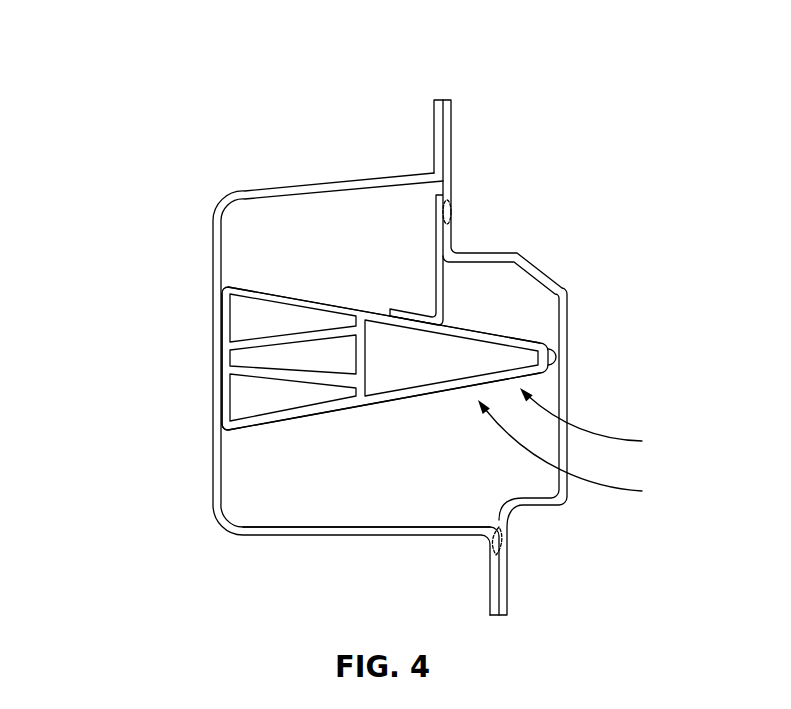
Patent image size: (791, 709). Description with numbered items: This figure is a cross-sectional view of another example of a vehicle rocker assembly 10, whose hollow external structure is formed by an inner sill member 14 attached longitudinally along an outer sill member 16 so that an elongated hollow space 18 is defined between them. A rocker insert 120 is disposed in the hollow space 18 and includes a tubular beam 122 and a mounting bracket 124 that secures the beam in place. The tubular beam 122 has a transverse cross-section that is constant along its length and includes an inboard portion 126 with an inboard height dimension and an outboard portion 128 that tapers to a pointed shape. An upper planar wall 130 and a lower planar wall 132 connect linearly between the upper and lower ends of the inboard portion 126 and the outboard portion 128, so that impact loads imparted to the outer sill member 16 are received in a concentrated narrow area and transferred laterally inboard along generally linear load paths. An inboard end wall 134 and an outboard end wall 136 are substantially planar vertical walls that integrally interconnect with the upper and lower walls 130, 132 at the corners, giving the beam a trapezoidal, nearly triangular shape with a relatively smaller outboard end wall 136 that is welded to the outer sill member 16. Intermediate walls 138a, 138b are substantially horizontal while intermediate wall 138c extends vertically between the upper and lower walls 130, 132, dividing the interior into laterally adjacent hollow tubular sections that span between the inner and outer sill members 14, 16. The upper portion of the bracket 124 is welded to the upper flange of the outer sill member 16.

The vehicle rocker assembly 10 is at (172, 126).
The inner sill member 14 is at (213, 267).
The outer sill member 16 is at (560, 284).
The elongated hollow space 18 is at (387, 479).
The rocker insert 120 is at (579, 454).
The tubular beam 122 is at (312, 282).
The mounting bracket 124 is at (444, 283).
The inboard portion 126 is at (240, 440).
The outboard portion 128 is at (600, 423).
The upper planar wall 130 is at (272, 290).
The lower planar wall 132 is at (420, 397).
The inboard end wall 134 is at (213, 387).
The outboard end wall 136 is at (556, 357).
The intermediate wall 138a is at (283, 378).
The intermediate wall 138b is at (322, 330).
The intermediate wall 138c is at (367, 362).